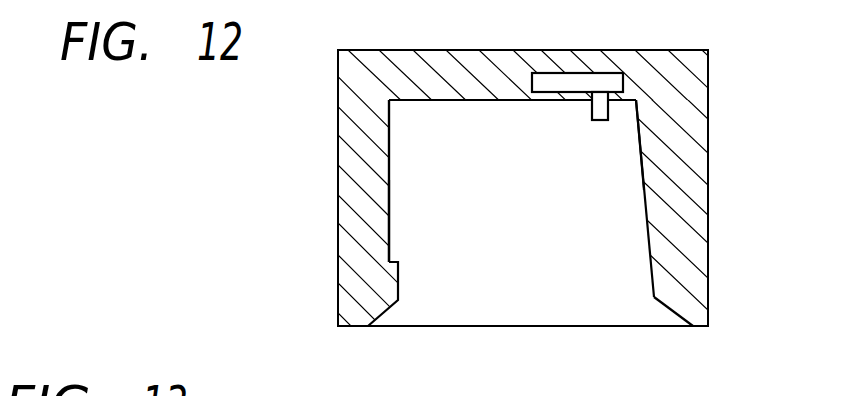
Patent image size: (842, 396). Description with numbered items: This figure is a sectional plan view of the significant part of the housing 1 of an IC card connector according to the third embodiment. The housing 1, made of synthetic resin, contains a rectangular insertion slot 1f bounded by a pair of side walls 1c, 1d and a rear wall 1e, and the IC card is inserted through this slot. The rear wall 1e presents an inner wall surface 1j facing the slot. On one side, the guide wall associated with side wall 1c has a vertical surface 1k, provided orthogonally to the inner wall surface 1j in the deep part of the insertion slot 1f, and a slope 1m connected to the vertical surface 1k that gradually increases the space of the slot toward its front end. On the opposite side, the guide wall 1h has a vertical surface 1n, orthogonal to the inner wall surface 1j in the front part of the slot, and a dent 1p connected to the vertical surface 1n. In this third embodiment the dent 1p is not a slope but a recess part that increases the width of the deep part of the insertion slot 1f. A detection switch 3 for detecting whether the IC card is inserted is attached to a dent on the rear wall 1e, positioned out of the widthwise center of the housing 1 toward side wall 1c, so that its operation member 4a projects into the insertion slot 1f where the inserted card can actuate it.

The housing 1 is at (664, 48).
The side wall 1c is at (705, 192).
The side wall 1d is at (345, 183).
The rear wall 1e is at (478, 50).
The insertion slot 1f is at (540, 312).
The guide wall 1h is at (389, 208).
The inner wall surface 1j is at (497, 101).
The vertical surface 1k is at (636, 127).
The slope 1m is at (648, 250).
The vertical surface 1n is at (400, 280).
The dent 1p is at (391, 158).
The detection switch 3 is at (590, 73).
The operation member 4a is at (591, 112).